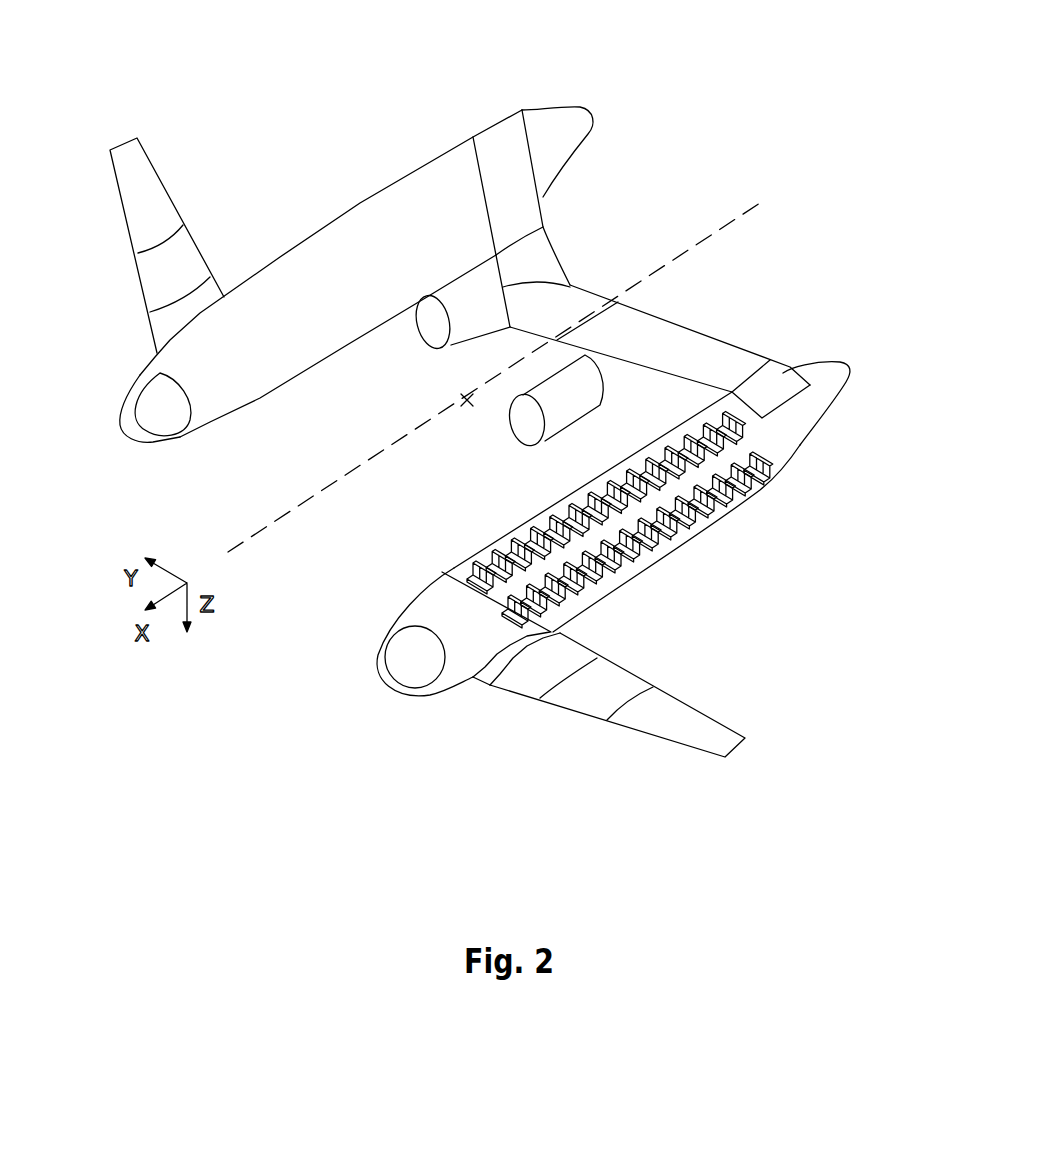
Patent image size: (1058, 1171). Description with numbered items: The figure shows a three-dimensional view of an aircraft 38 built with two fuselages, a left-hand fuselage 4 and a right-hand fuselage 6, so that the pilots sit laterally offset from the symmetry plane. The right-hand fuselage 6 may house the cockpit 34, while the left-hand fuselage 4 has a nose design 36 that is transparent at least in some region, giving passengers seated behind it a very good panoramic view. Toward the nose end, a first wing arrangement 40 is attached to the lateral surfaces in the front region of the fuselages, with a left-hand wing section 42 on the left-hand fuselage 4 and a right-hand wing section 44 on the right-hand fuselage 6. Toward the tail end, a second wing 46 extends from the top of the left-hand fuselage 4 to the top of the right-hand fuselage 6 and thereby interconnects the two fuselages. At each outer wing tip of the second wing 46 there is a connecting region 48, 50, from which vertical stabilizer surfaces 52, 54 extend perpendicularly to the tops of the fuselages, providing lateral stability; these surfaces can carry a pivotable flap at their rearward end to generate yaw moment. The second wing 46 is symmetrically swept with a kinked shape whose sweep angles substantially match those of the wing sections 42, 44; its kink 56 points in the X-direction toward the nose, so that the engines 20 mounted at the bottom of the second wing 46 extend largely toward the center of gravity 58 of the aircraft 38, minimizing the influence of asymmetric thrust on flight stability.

The left-hand aircraft fuselage 4 is at (642, 574).
The right-hand aircraft fuselage 6 is at (448, 223).
The engines 20 is at (486, 398).
The cockpit 34 is at (135, 383).
The nose design 36 is at (421, 704).
The aircraft 38 is at (727, 114).
The first wing arrangement 40 is at (626, 721).
The left-hand wing section 42 is at (648, 792).
The right-hand wing section 44 is at (173, 225).
The second wing 46 is at (662, 314).
The connecting region 48 is at (789, 313).
The connecting region 50 is at (554, 166).
The vertical stabilizer surface 52 is at (848, 368).
The vertical stabilizer surface 54 is at (578, 115).
The kink 56 is at (458, 368).
The center of gravity 58 is at (495, 376).